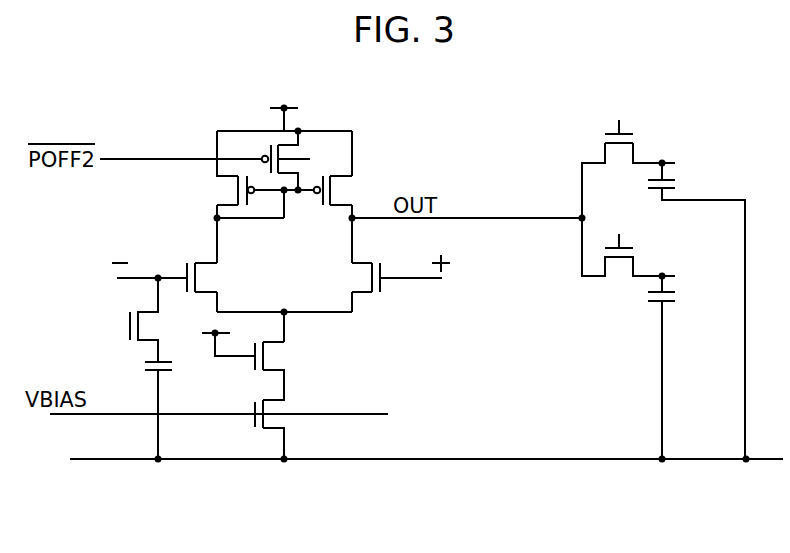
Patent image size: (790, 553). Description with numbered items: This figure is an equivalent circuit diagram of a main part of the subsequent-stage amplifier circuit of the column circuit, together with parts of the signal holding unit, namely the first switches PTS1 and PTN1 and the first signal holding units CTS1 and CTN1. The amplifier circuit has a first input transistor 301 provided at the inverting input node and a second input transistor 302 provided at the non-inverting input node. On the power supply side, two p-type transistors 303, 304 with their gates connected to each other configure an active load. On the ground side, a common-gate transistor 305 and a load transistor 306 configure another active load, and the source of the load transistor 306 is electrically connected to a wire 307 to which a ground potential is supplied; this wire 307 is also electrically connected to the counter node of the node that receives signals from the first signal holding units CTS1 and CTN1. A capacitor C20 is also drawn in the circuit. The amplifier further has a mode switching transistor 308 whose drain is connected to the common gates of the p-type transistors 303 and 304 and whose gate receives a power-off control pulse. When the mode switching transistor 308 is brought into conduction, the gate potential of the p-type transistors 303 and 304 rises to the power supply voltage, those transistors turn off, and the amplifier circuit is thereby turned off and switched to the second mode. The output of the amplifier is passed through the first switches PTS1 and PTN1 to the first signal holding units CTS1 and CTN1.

The first input transistor 301 is at (219, 278).
The second input transistor 302 is at (355, 277).
The p-type transistor 303 is at (222, 188).
The p-type transistor 304 is at (347, 190).
The common-gate transistor 305 is at (280, 356).
The load transistor 306 is at (280, 420).
The wire 307 is at (457, 462).
The mode switching transistor 308 is at (295, 152).
The compensation capacitor C20 is at (168, 368).
The first switch PTS1 is at (620, 158).
The first signal holding unit CTS1 is at (675, 185).
The first switch PTN1 is at (620, 272).
The first signal holding unit CTN1 is at (675, 298).